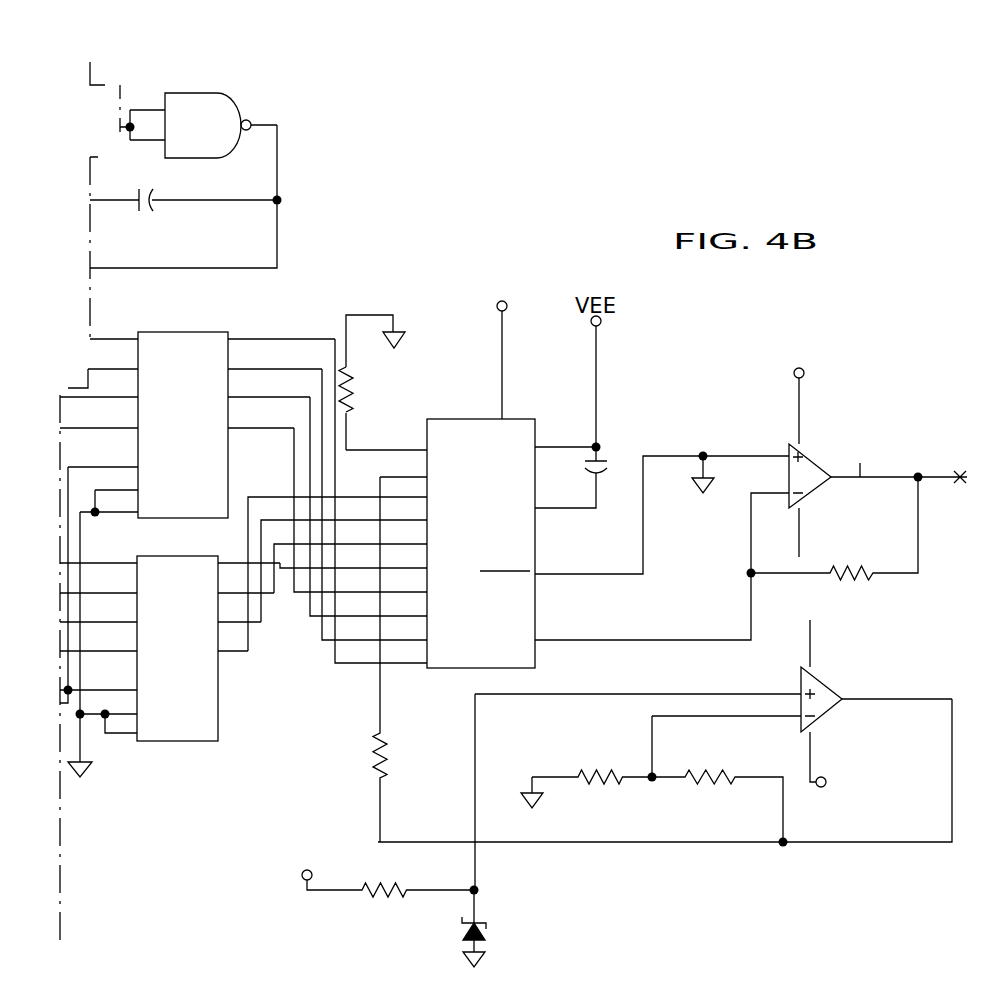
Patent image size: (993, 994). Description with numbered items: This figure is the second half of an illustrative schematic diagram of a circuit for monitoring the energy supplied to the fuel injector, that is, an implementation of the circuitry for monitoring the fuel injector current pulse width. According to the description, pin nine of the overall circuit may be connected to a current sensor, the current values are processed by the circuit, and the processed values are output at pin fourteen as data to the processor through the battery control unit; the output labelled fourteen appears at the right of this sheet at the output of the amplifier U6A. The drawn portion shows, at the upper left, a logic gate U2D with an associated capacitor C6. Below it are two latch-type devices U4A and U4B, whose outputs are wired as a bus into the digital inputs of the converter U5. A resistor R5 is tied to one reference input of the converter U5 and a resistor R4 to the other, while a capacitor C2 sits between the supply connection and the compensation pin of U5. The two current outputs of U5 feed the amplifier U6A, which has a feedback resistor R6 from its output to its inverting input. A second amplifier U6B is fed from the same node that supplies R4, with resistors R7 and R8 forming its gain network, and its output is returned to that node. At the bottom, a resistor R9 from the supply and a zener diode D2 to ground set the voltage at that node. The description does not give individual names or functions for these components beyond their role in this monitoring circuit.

The NAND gate 4011 U2D is at (201, 122).
The capacitor .01 mfd C6 is at (183, 209).
The latch 4508 (A) U4A is at (197, 426).
The latch 4508 (B) U4B is at (170, 642).
The DAC0808 digital-to-analog converter U5 is at (477, 488).
The resistor 10.0K R5 is at (380, 382).
The resistor 10.0K R4 is at (417, 659).
The capacitor .1 C2 is at (587, 491).
The op amp LF442 (A) U6A is at (868, 449).
The op amp LF442 (B) U6B is at (863, 710).
The resistor 2.49K R6 is at (834, 547).
The resistor 2.49K R7 is at (586, 776).
The resistor 7.50K R8 is at (698, 776).
The resistor 1K 1/2W R9 is at (382, 879).
The zener diode 2.5V D2 is at (509, 928).